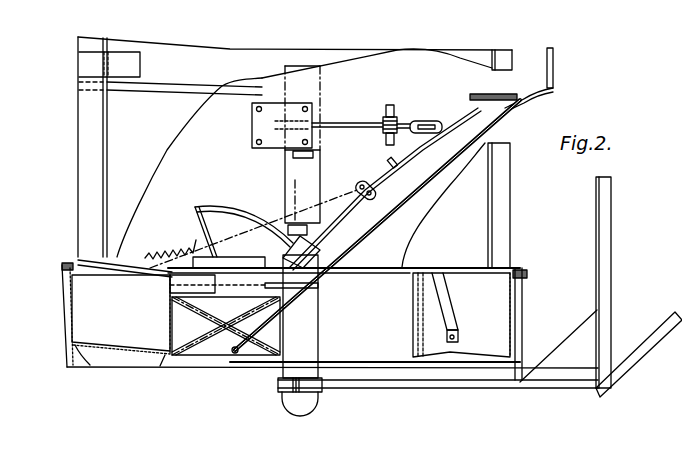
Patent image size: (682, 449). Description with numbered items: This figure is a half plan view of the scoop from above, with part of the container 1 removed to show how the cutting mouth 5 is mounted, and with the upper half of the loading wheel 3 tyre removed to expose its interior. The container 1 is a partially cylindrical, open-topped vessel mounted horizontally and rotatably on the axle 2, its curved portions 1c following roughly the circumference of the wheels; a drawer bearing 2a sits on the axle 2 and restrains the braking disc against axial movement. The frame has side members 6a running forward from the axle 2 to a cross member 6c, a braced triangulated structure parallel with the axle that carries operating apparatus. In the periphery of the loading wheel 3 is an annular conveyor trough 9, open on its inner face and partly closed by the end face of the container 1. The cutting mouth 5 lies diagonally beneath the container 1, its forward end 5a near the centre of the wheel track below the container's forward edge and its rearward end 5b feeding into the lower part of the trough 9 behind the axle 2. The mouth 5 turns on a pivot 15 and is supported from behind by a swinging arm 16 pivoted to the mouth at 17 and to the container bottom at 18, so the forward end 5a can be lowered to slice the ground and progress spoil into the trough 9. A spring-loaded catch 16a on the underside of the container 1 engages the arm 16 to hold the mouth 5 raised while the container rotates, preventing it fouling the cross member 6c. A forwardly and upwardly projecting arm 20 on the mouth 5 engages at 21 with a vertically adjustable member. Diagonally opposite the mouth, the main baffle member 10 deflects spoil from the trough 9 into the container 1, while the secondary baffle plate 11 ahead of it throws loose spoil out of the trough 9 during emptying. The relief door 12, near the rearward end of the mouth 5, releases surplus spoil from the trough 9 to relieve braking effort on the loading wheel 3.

The container 1 is at (396, 52).
The cylindrical contour portions 1c is at (78, 148).
The axle 2 is at (344, 316).
The drawer bearing 2a is at (278, 384).
The loading wheel 3 is at (62, 288).
The cutting mouth 5 is at (404, 176).
The forward end of cutting mouth 5a is at (496, 95).
The rearward end of cutting mouth 5b is at (338, 255).
The side member 6a is at (670, 320).
The cross member 6c is at (597, 205).
The annular conveyor trough 9 is at (142, 312).
The main baffle member 10 is at (250, 337).
The secondary baffle plate 11 is at (488, 310).
The relief door 12 is at (243, 260).
The pivot 15 is at (302, 228).
The swinging arm 16 is at (356, 122).
The catch 16a is at (396, 115).
The pivot 17 is at (433, 121).
The pivot 18 is at (312, 122).
The forwardly and upwardly projecting arm 20 is at (526, 103).
The engagement point 21 is at (553, 78).